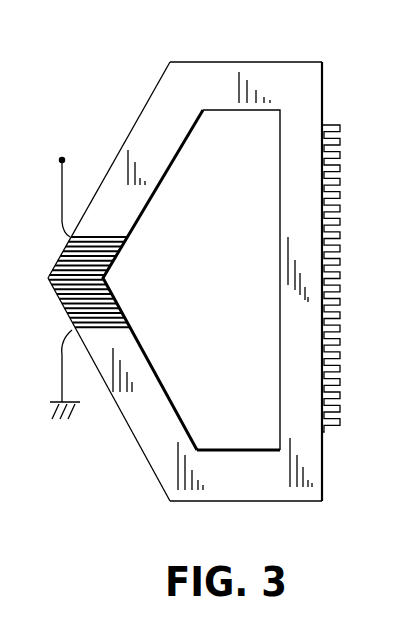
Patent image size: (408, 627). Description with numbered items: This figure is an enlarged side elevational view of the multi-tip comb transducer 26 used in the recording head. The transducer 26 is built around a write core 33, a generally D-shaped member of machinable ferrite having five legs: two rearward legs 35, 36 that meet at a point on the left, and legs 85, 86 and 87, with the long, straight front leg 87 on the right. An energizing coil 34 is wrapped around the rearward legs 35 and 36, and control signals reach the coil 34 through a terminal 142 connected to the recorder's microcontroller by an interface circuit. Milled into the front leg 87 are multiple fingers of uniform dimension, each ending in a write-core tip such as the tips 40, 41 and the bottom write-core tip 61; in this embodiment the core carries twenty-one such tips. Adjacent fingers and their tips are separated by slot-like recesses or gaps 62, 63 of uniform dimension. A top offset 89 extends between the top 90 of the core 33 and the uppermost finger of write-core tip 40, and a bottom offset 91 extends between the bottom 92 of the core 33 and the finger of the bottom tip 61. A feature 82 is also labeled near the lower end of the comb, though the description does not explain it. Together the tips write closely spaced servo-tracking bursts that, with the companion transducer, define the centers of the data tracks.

The comb transducer 26 is at (106, 468).
The write core 33 is at (169, 62).
The energizing coil 34 is at (118, 243).
The rearward leg 35 is at (147, 132).
The rearward leg 36 is at (160, 460).
The write-core tip 40 is at (340, 128).
The write-core tip 41 is at (340, 145).
The bottom write-core tip 61 is at (326, 433).
The slot-like recess 62 is at (326, 136).
The slot-like recess 63 is at (326, 152).
The lower slot 82 is at (326, 422).
The leg 85 is at (236, 72).
The leg 86 is at (238, 460).
The front leg 87 is at (292, 181).
The top offset 89 is at (325, 80).
The top of core 90 is at (279, 62).
The bottom offset 91 is at (326, 489).
The bottom of core 92 is at (228, 503).
The terminal 142 is at (58, 160).